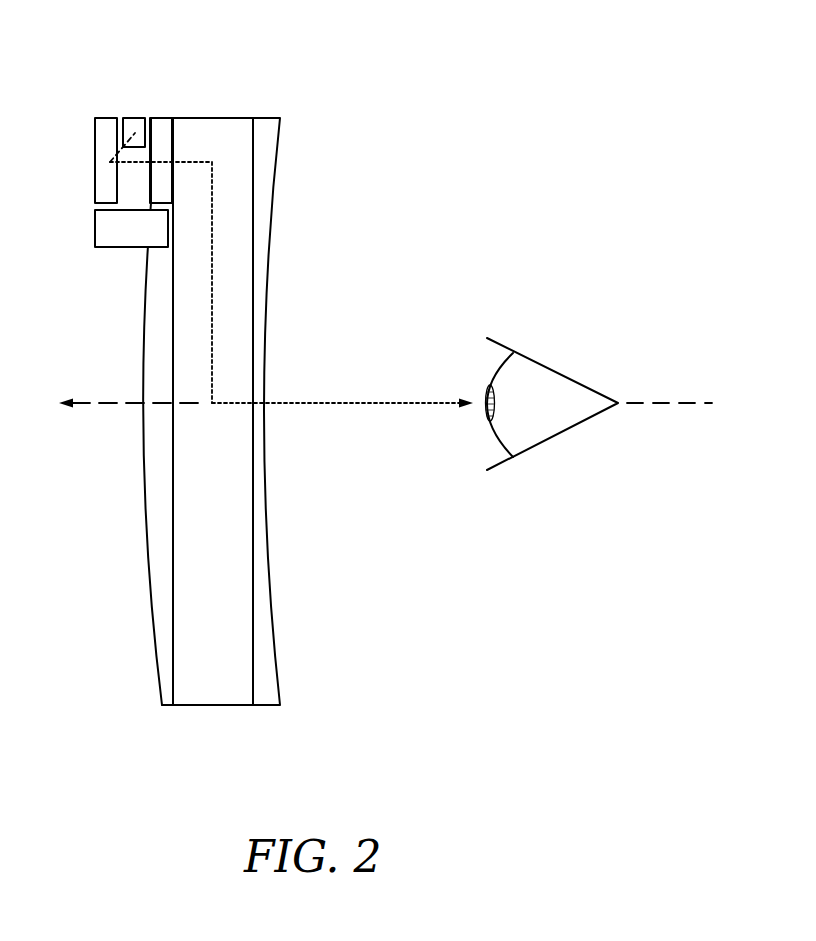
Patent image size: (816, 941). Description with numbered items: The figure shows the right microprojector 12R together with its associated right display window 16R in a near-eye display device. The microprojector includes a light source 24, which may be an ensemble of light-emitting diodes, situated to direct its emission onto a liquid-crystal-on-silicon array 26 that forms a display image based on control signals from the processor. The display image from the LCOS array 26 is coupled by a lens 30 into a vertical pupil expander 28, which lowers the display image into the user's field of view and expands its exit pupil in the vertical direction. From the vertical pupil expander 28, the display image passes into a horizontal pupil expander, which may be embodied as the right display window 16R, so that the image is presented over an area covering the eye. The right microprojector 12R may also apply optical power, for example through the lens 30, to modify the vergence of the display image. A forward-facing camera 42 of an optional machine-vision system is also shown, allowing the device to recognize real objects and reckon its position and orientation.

The right microprojector 12R is at (320, 148).
The right display window 16R is at (150, 600).
The light source 24 is at (137, 118).
The liquid-crystal-on-silicon (LCOS) array 26 is at (95, 163).
The vertical pupil expander 28 is at (224, 696).
The lens 30 is at (162, 118).
The forward-facing camera 42 is at (141, 238).